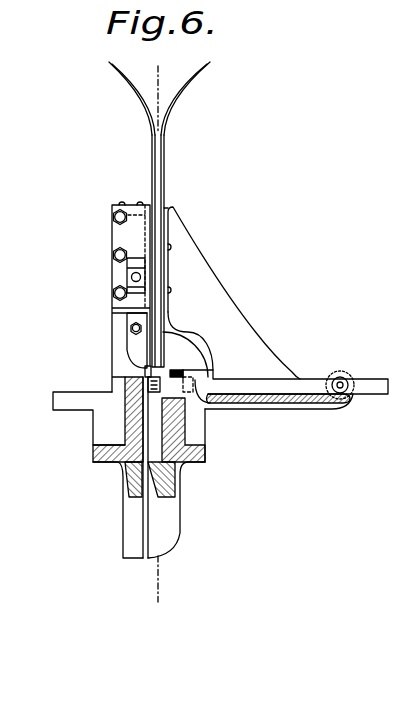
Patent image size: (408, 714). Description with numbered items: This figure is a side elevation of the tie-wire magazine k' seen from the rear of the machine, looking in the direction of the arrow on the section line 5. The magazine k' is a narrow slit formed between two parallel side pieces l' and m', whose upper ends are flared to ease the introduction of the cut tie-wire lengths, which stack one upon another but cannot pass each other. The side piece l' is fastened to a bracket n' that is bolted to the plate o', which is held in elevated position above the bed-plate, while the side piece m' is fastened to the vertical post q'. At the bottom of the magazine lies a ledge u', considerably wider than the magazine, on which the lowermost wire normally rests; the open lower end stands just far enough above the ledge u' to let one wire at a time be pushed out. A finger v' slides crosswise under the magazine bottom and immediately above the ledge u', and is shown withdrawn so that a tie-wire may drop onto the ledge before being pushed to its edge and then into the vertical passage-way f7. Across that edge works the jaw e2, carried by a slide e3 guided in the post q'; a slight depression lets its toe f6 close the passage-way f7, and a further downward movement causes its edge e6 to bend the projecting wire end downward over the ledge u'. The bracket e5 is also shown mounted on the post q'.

The section line 5 5 is at (196, 67).
The side piece m' is at (154, 98).
The side piece l' is at (175, 251).
The magazine k' is at (118, 162).
The vertical post q' is at (101, 323).
The slide e3 is at (137, 233).
The bracket e5 is at (130, 278).
The jaw e2 is at (136, 350).
The bracket n' is at (232, 293).
The edge of jaw e6 is at (150, 355).
The finger v' is at (197, 349).
The plate o' is at (285, 407).
The toe f6 is at (143, 374).
The passage-way f7 is at (147, 465).
The ledge u' is at (199, 430).